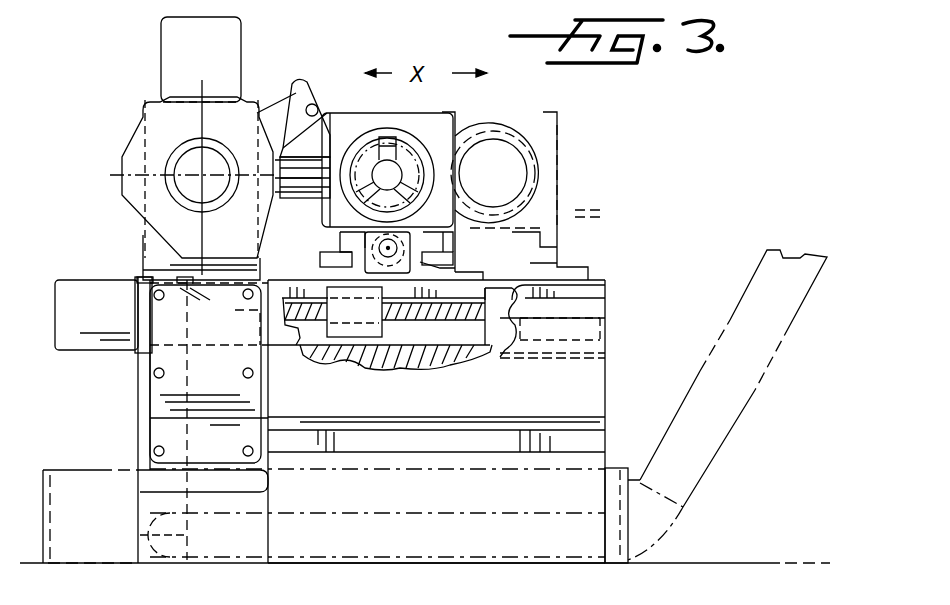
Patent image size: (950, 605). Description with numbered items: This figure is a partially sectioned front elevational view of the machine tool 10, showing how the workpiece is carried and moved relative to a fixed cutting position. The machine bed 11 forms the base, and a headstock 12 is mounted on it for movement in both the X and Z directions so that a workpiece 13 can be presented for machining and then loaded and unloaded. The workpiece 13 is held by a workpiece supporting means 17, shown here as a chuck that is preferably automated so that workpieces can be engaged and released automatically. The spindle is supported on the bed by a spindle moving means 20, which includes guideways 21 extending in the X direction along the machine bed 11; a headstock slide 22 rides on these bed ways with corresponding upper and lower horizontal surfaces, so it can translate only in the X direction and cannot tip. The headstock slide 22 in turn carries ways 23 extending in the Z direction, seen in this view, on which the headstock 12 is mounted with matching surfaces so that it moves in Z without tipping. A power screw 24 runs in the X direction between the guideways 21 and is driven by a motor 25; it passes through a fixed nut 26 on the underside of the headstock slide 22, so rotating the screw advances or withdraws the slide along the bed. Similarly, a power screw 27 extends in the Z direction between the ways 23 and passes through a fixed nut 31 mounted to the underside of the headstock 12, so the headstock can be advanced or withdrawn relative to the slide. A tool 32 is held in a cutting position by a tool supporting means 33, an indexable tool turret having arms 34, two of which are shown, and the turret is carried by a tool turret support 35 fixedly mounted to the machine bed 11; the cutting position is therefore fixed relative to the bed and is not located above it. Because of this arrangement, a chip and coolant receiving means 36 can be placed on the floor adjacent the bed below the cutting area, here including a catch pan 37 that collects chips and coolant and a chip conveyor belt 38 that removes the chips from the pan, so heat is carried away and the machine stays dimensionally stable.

The machine tool 10 is at (140, 74).
The machine bed 11 is at (605, 335).
The headstock 12 is at (362, 113).
The workpiece 13 is at (566, 126).
The workpiece supporting means 17 is at (440, 112).
The spindle moving means 20 is at (573, 261).
The guideways 21 is at (605, 283).
The headstock slide 22 is at (440, 266).
The ways 23 is at (340, 240).
The power screw 24 is at (452, 318).
The motor 25 is at (85, 290).
The fixed nut 26 is at (343, 336).
The power screw 27 is at (389, 256).
The fixed nut 31 is at (365, 263).
The tool 32 is at (375, 128).
The tool supporting means 33 is at (128, 150).
The arms 34 is at (293, 88).
The tool turret support 35 is at (150, 392).
The chip and coolant receiving means 36 is at (620, 458).
The catch pan 37 is at (47, 493).
The chip conveyor belt 38 is at (757, 365).